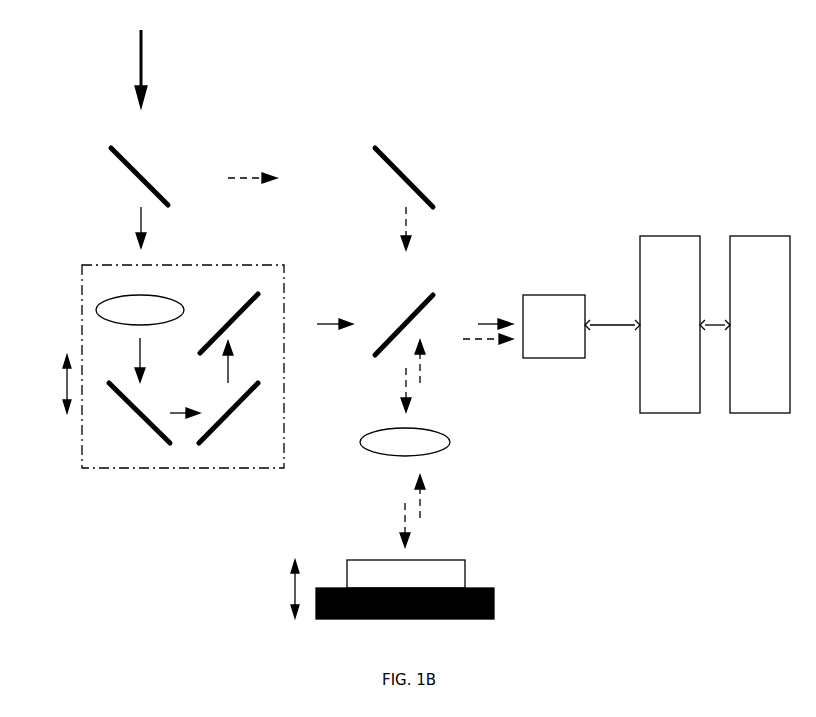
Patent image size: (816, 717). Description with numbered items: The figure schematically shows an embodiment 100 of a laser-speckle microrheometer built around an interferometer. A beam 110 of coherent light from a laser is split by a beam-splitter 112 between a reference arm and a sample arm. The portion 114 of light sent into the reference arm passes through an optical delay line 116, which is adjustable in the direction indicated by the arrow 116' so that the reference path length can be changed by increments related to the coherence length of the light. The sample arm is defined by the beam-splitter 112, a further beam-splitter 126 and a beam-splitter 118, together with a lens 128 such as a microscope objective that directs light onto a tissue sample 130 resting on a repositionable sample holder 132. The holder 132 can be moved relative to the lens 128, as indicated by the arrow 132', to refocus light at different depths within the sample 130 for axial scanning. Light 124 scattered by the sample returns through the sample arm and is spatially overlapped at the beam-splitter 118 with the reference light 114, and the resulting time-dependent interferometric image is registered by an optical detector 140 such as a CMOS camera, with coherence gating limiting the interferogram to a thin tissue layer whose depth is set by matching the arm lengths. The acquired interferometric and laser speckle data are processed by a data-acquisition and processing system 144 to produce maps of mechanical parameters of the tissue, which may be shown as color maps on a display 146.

The laser-speckle microrheometer embodiment 100 is at (527, 52).
The beam of light 110 is at (141, 58).
The beam-splitter 112 is at (125, 165).
The portion of light 114 is at (141, 220).
The optical delay line 116 is at (183, 366).
The arrow indicating adjustment of the delay line 116' is at (46, 388).
The beam-splitter 118 is at (433, 297).
The portion of light 124 is at (485, 339).
The beam-splitter 126 is at (392, 158).
The lens 128 is at (382, 442).
The tissue sample 130 is at (465, 565).
The sample holder 132 is at (443, 599).
The arrow indicating repositioning of the sample holder 132' is at (270, 594).
The optical detector 140 is at (568, 335).
The data-acquisition and processing system 144 is at (684, 400).
The display 146 is at (771, 400).